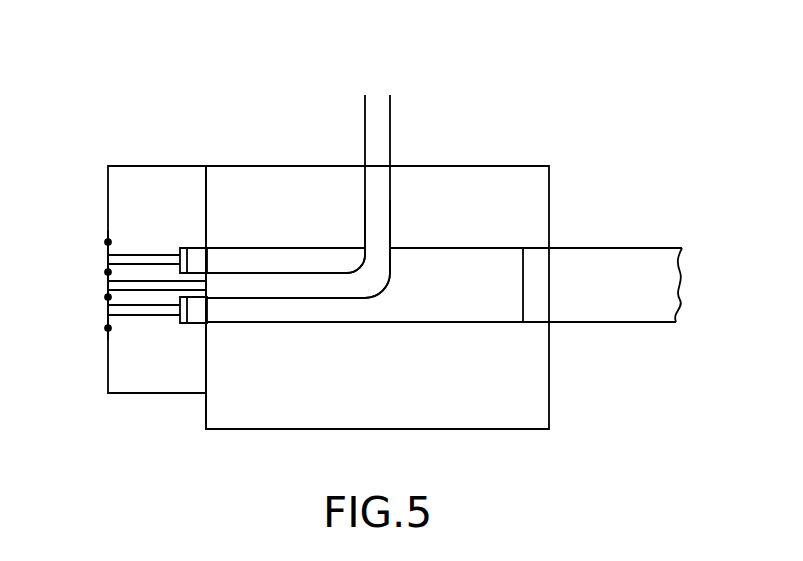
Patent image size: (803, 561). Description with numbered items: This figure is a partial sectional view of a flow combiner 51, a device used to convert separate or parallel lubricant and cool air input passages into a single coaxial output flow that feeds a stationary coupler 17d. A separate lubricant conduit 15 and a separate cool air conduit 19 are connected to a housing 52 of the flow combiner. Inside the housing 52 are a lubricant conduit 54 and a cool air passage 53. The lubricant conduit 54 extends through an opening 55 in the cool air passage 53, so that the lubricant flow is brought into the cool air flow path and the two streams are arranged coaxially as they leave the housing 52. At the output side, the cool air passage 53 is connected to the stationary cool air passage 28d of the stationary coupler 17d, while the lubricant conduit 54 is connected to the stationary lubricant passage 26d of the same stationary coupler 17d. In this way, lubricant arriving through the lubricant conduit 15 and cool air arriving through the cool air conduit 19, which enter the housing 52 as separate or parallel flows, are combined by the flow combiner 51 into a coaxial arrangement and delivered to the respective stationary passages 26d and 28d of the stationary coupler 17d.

The flow combiner 51 is at (576, 118).
The housing 52 is at (468, 166).
The cool air passage 53 is at (312, 322).
The lubricant conduit 54 is at (390, 214).
The opening 55 is at (365, 247).
The lubricant conduit 15 is at (390, 142).
The cool air conduit 19 is at (600, 248).
The stationary coupler 17d is at (142, 166).
The stationary cool air passage 28d is at (143, 255).
The stationary lubricant passage 26d is at (158, 292).